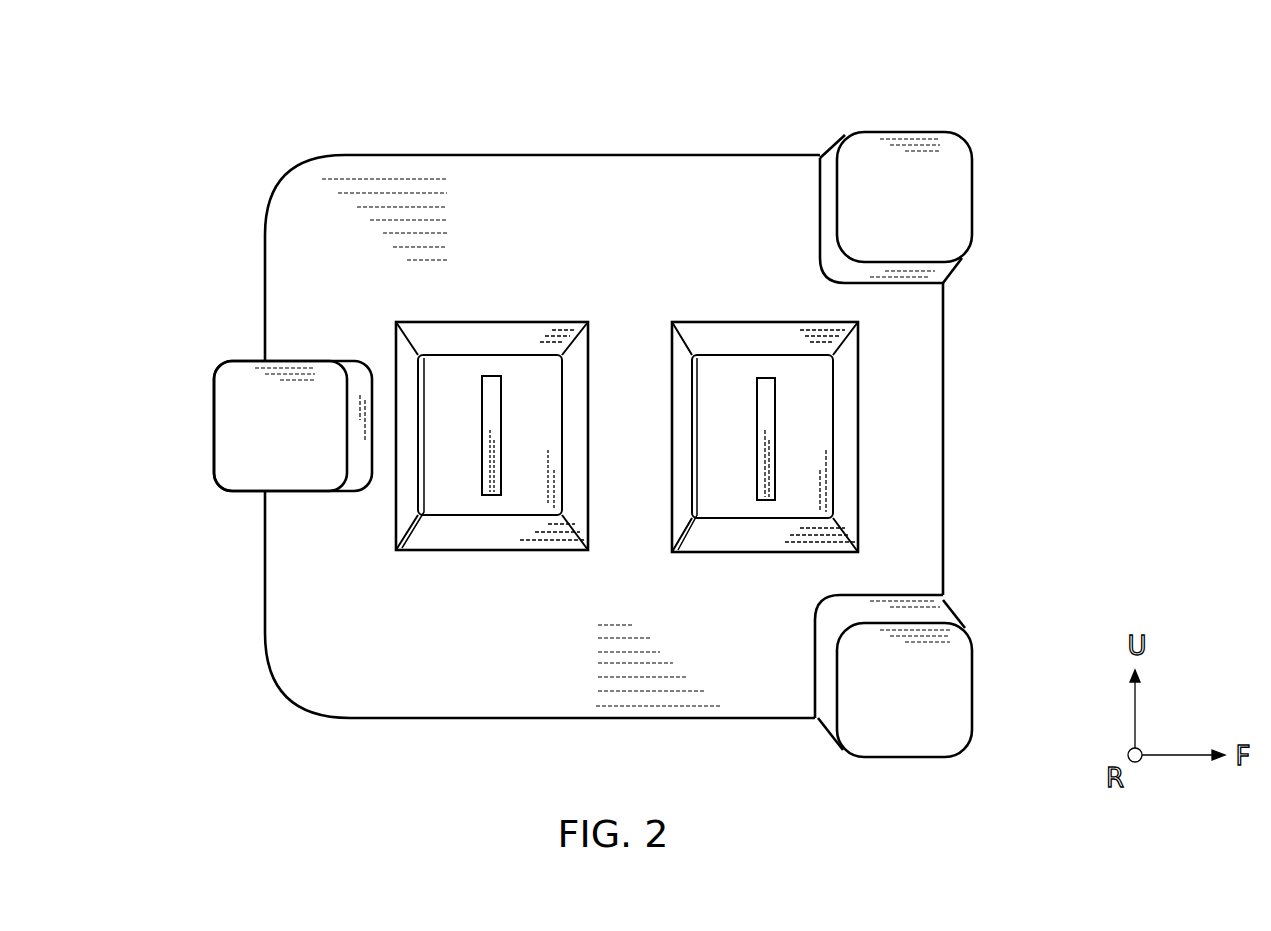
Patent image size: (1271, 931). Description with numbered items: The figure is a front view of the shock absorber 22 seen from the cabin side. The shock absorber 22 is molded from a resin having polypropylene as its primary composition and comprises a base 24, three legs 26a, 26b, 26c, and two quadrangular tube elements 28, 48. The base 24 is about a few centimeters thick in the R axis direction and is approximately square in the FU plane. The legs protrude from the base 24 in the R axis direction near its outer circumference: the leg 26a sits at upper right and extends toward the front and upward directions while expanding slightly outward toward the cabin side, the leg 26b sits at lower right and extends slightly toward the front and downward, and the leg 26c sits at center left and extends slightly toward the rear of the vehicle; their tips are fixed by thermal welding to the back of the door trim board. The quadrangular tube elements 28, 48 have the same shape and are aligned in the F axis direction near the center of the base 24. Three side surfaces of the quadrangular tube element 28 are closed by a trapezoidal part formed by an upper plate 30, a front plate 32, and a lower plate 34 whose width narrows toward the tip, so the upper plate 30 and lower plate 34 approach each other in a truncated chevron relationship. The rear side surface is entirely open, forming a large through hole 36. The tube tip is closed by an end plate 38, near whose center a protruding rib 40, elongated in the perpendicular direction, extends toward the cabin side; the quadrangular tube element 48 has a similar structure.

The shock absorber 22 is at (797, 117).
The base 24 is at (623, 153).
The leg 26a is at (972, 153).
The leg 26b is at (967, 633).
The leg 26c is at (217, 367).
The quadrangular tube element 28 is at (462, 318).
The upper plate 30 is at (447, 328).
The front plate 32 is at (578, 352).
The lower plate 34 is at (485, 537).
The through hole 36 is at (397, 528).
The end plate 38 is at (432, 500).
The protruding rib 40 is at (480, 453).
The quadrangular tube element 48 is at (718, 318).